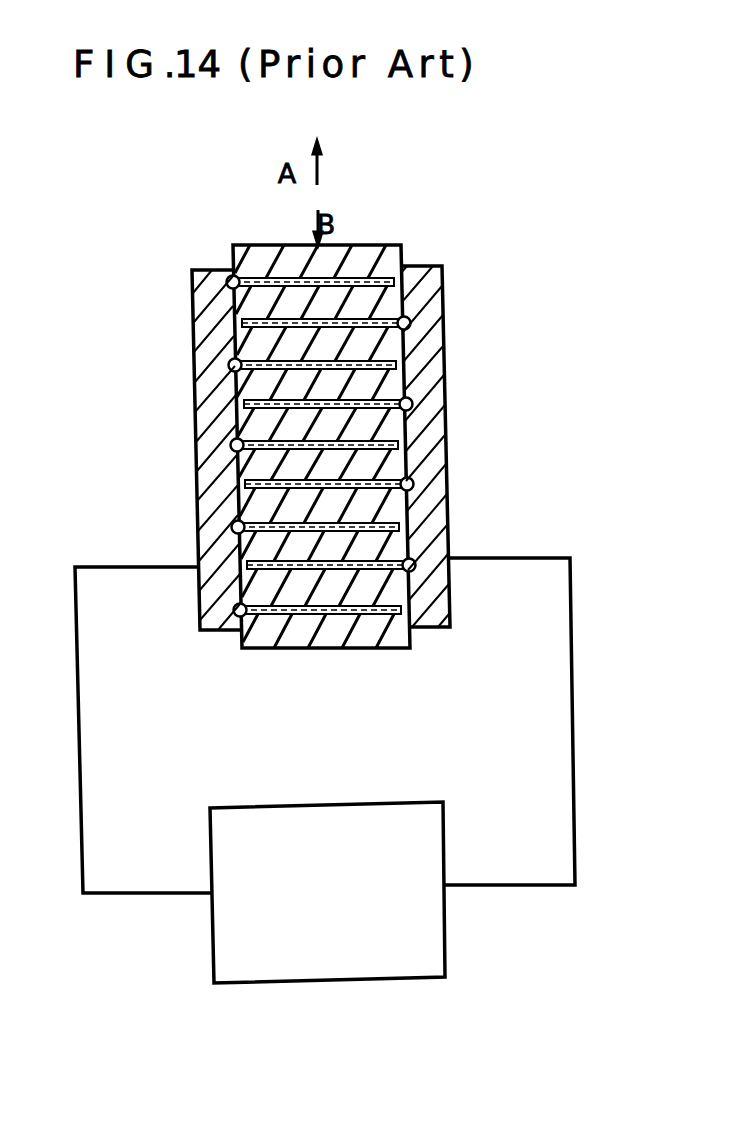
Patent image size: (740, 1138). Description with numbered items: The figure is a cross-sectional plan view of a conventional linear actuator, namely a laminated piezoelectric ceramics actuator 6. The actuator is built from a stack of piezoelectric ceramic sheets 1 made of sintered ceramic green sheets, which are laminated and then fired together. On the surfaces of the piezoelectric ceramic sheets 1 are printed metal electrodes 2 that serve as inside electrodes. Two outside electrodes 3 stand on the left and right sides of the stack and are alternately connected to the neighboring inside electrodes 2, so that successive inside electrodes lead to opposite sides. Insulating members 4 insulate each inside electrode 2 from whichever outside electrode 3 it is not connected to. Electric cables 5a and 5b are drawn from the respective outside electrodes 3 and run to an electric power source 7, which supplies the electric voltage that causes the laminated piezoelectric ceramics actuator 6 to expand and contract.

The piezoelectric ceramic sheet 1 is at (376, 248).
The metal electrode 2 is at (262, 250).
The outside electrode 3 is at (205, 412).
The insulating member 4 is at (229, 288).
The electric cable 5a is at (573, 688).
The electric cable 5b is at (77, 704).
The laminated piezoelectric ceramics actuator 6 is at (313, 449).
The electric power source 7 is at (437, 935).